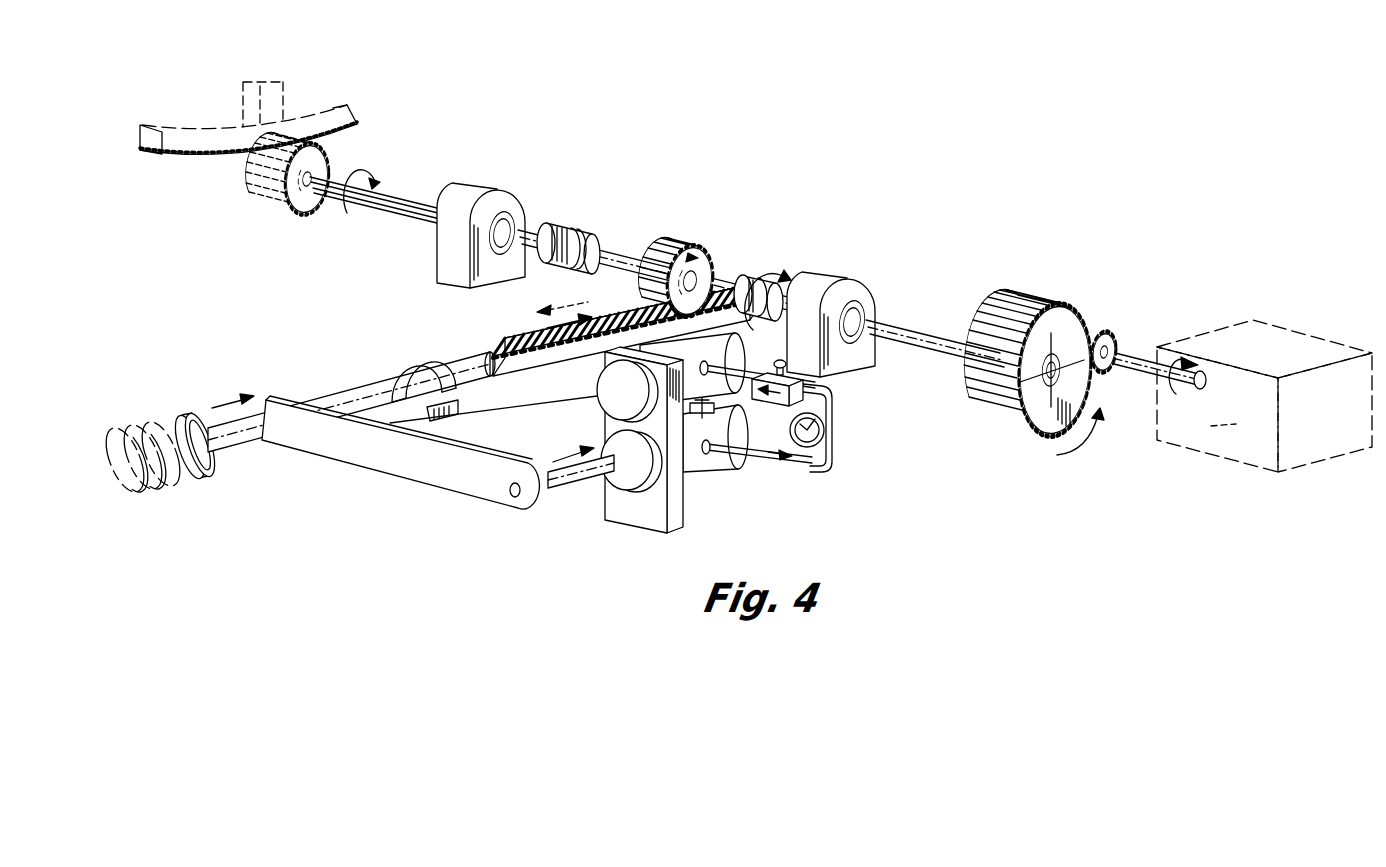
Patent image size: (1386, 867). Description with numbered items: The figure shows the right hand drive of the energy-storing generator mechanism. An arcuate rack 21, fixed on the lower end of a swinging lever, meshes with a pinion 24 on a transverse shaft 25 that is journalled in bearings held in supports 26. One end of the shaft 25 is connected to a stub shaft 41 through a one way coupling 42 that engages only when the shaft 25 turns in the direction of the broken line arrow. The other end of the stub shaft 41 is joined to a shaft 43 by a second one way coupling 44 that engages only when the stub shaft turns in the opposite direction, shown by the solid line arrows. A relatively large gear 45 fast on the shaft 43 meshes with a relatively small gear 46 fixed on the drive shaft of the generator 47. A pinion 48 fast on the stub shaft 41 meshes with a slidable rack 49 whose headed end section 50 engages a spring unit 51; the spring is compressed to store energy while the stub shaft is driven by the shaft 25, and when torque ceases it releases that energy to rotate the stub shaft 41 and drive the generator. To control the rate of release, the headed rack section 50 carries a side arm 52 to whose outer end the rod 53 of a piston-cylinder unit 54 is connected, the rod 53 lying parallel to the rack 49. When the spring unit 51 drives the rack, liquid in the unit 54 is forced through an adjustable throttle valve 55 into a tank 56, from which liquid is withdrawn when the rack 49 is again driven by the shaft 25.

The arcuate rack 21 is at (325, 128).
The pinion 24 is at (314, 216).
The transverse shaft 25 is at (420, 228).
The supports 26 is at (499, 212).
The stub shaft 41 is at (618, 251).
The one way coupling 42 is at (560, 233).
The shaft 43 is at (928, 338).
The one way coupling 44 is at (757, 280).
The relatively large gear 45 is at (1052, 316).
The relatively small gear 46 is at (1099, 337).
The generator 47 is at (1280, 326).
The pinion 48 is at (691, 250).
The slidable rack 49 is at (505, 355).
The headed end section 50 is at (345, 392).
The spring unit 51 is at (168, 412).
The side arm 52 is at (456, 495).
The rod 53 is at (573, 490).
The piston-cylinder unit 54 is at (688, 395).
The adjustable throttle valve 55 is at (767, 400).
The tank 56 is at (696, 418).